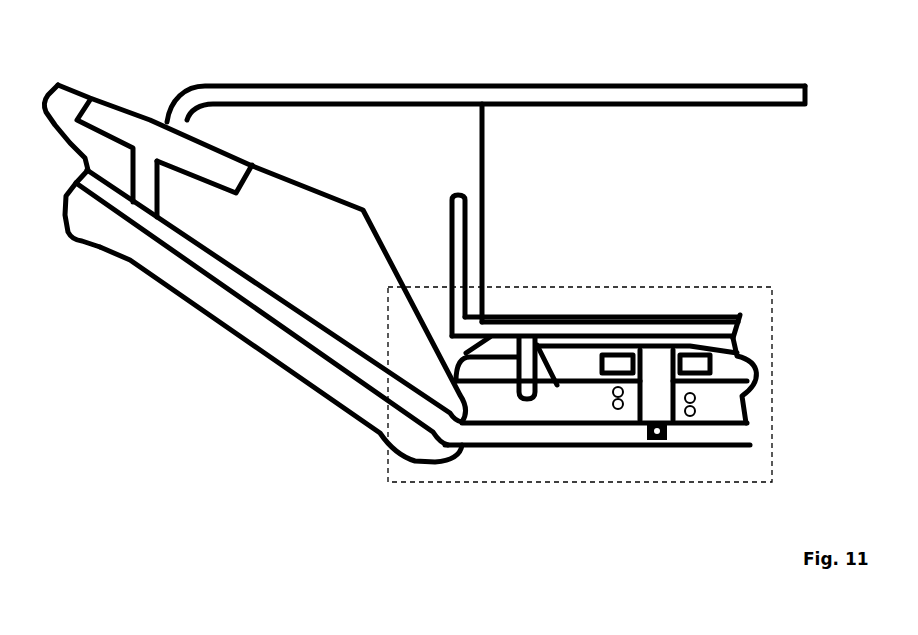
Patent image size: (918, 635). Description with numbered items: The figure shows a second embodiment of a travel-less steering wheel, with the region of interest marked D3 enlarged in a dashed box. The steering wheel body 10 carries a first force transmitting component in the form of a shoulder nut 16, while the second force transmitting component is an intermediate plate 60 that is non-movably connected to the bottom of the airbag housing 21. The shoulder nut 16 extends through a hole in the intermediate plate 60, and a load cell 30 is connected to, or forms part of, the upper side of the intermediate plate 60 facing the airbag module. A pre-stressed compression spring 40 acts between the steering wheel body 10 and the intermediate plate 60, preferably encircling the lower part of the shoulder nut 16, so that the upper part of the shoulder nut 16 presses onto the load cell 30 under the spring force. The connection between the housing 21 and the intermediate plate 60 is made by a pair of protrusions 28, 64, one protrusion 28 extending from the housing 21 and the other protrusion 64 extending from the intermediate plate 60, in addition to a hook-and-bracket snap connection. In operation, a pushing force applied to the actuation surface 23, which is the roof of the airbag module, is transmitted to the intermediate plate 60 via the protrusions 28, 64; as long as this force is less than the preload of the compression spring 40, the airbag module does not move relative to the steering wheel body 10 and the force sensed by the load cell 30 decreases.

The steering wheel body 10 is at (558, 432).
The shoulder nut 16 is at (653, 393).
The housing 21 is at (452, 238).
The actuation surface 23 is at (686, 86).
The protrusion 28 is at (487, 337).
The load cell 30 is at (697, 363).
The compression spring 40 is at (697, 400).
The intermediate plate 60 is at (560, 322).
The protrusion 64 is at (478, 347).
The detail region D3 is at (687, 487).